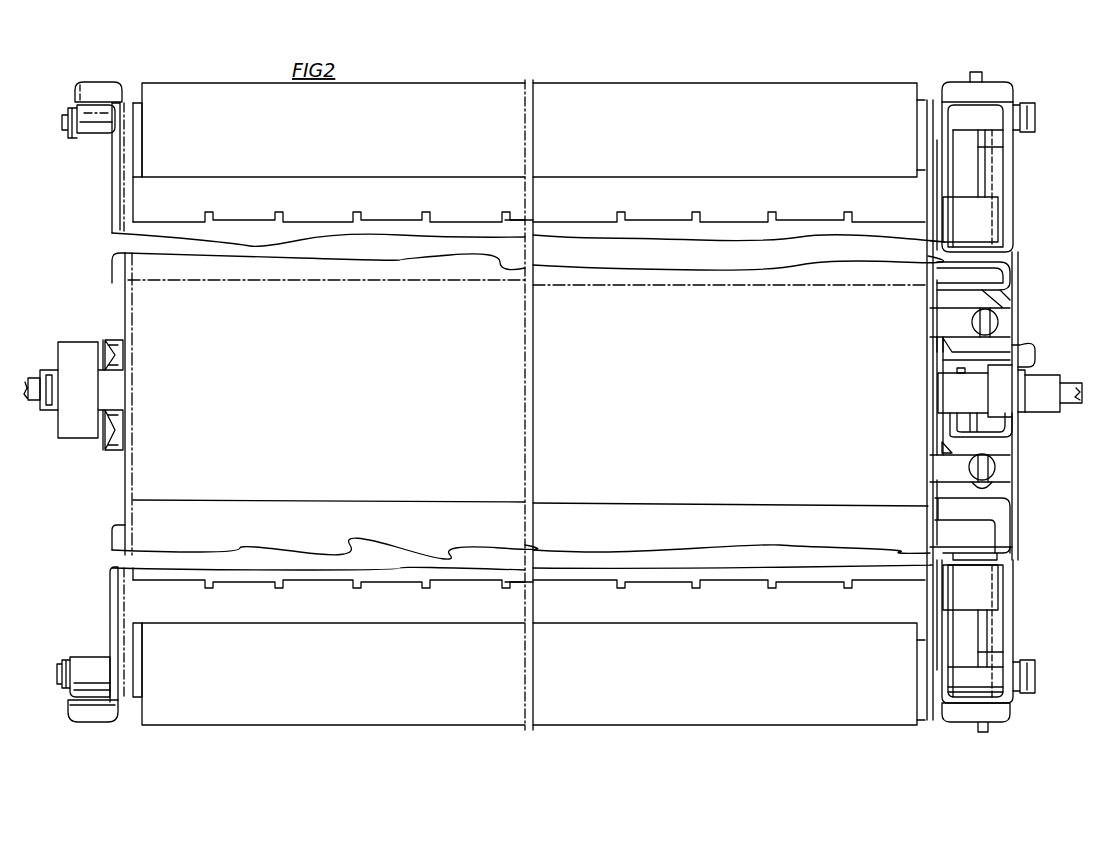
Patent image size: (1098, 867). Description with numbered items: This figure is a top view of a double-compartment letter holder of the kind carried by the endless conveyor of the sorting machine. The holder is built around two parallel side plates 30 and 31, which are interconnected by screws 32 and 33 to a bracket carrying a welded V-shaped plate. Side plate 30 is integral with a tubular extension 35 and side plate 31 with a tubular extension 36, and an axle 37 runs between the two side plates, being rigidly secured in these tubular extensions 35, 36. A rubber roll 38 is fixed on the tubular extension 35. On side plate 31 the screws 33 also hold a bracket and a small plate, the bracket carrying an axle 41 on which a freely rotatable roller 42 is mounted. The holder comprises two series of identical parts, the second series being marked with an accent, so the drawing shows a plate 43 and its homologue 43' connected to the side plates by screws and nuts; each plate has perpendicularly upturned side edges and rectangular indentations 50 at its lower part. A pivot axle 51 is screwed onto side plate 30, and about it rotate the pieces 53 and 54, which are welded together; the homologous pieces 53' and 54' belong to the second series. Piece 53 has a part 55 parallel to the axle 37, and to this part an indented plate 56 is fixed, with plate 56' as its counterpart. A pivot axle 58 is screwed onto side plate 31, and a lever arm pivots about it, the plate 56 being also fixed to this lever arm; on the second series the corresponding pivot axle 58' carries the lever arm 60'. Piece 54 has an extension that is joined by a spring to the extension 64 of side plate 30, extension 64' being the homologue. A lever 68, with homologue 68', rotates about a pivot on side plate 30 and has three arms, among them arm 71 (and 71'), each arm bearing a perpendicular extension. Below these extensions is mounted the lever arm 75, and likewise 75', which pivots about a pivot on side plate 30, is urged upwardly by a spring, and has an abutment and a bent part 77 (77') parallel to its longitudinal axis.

The side plate 30 is at (937, 360).
The side plate 31 is at (145, 325).
The screw 32 is at (950, 350).
The screw 33 is at (105, 343).
The tubular extension 35 is at (1040, 432).
The tubular extension 36 is at (43, 410).
The axle 37 is at (33, 368).
The rubber roll 38 is at (1022, 370).
The axle 41 is at (103, 405).
The roller 42 is at (72, 425).
The plate 43 is at (533, 674).
The plate 43' is at (533, 130).
The rectangular indentations 50 is at (70, 716).
The pivot axle 51 is at (952, 673).
The piece 53 is at (943, 715).
The piece 53' is at (964, 186).
The piece 54 is at (994, 619).
The piece 54' is at (1000, 177).
The part 55 is at (958, 508).
The plate 56 is at (521, 529).
The plate 56' is at (528, 281).
The pivot axle 58 is at (83, 662).
The pivot axle 58' is at (88, 135).
The lever arm 60' is at (98, 79).
The extension 64 is at (970, 471).
The extension 64' is at (970, 313).
The lever 68 is at (970, 587).
The lever 68' is at (970, 219).
The arm 71 is at (976, 633).
The arm 71' is at (975, 147).
The lever arm 75 is at (970, 638).
The lever arm 75' is at (967, 163).
The bent part 77 is at (1001, 631).
The bent part 77' is at (1003, 176).